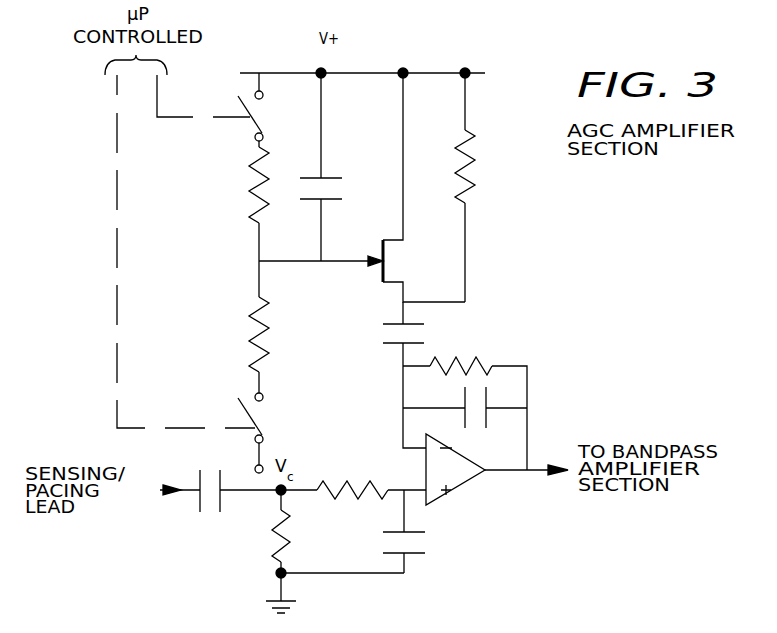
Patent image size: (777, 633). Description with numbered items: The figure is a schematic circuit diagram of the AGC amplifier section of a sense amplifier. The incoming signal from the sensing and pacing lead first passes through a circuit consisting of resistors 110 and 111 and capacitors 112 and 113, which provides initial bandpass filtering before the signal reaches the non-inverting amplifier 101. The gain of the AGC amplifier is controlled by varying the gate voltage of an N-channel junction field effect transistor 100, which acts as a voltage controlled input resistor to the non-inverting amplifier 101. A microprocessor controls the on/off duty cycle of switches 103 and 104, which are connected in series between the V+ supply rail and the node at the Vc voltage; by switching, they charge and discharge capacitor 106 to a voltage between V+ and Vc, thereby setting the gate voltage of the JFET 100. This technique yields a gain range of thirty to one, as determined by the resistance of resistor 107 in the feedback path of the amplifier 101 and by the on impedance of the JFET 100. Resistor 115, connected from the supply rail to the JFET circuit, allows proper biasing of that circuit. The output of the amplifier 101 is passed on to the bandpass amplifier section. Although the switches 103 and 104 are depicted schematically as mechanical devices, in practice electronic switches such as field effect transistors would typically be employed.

The N-channel junction field effect transistor 100 is at (388, 250).
The non-inverting amplifier 101 is at (460, 485).
The switch 103 is at (258, 122).
The switch 104 is at (256, 428).
The capacitor 106 is at (322, 178).
The resistor 107 is at (455, 357).
The resistor 110 is at (263, 527).
The resistor 111 is at (326, 480).
The capacitor 112 is at (217, 468).
The capacitor 113 is at (427, 543).
The resistor 115 is at (475, 183).